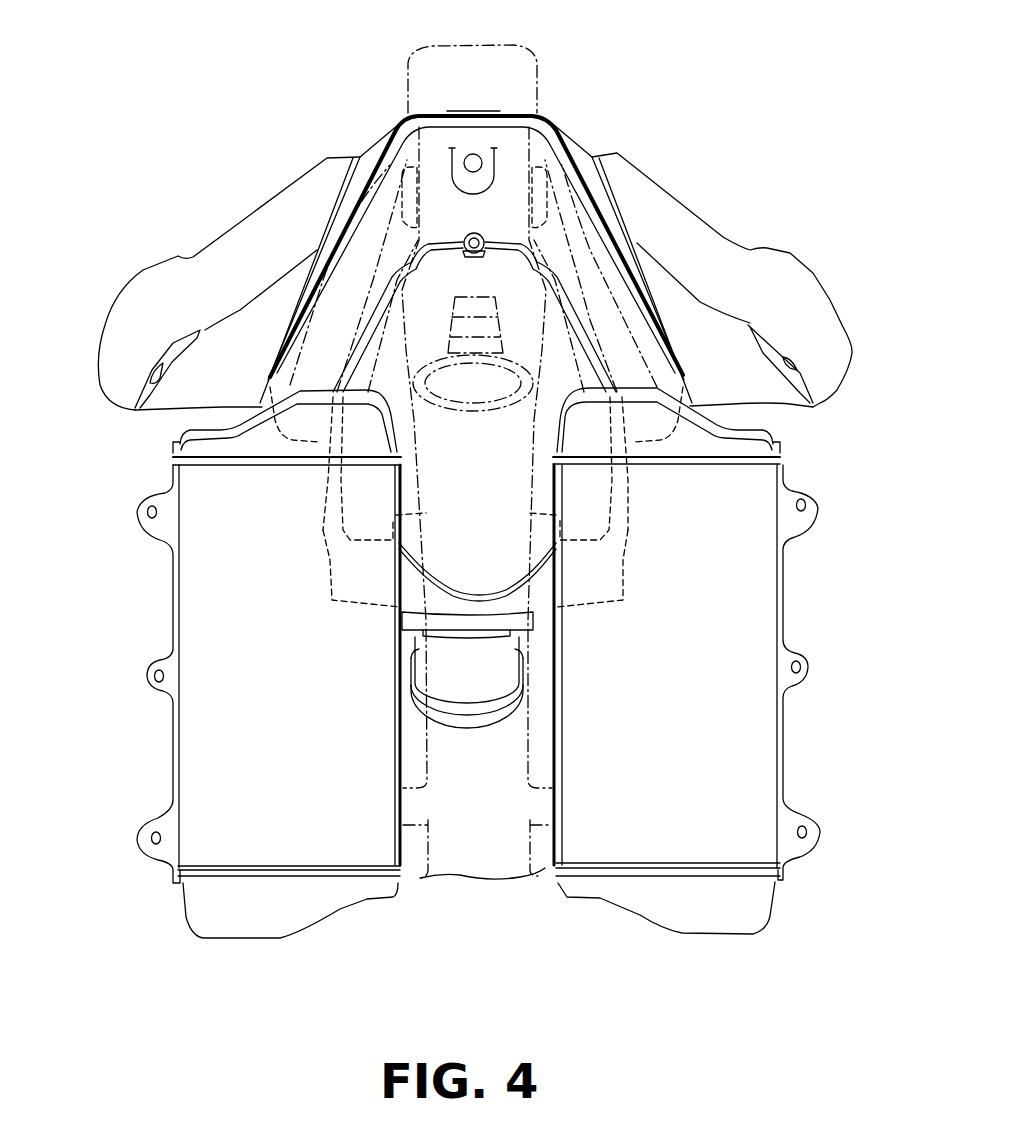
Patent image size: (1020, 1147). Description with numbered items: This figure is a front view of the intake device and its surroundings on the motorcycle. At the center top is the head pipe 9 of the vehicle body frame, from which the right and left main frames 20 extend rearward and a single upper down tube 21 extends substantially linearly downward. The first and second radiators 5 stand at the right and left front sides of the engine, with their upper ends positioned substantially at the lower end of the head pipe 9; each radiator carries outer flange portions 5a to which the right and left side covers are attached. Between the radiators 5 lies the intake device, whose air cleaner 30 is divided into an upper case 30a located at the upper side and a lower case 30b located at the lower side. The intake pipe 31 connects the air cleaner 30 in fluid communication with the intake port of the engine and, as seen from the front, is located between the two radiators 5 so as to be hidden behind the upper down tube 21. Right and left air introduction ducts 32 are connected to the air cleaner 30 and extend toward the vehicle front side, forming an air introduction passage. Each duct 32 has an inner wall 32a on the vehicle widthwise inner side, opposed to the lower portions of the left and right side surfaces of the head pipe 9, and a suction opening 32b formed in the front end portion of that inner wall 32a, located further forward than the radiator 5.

The head pipe 9 is at (527, 52).
The main frame 20 is at (370, 220).
The upper down tube 21 is at (530, 722).
The air cleaner 30 is at (640, 535).
The upper case 30a is at (568, 135).
The lower case 30b is at (630, 562).
The intake pipe 31 is at (516, 641).
The air introduction duct 32 is at (226, 231).
The inner wall 32a is at (178, 398).
The suction opening 32b is at (150, 377).
The radiator 5 is at (165, 616).
The outer flange portion 5a is at (137, 528).